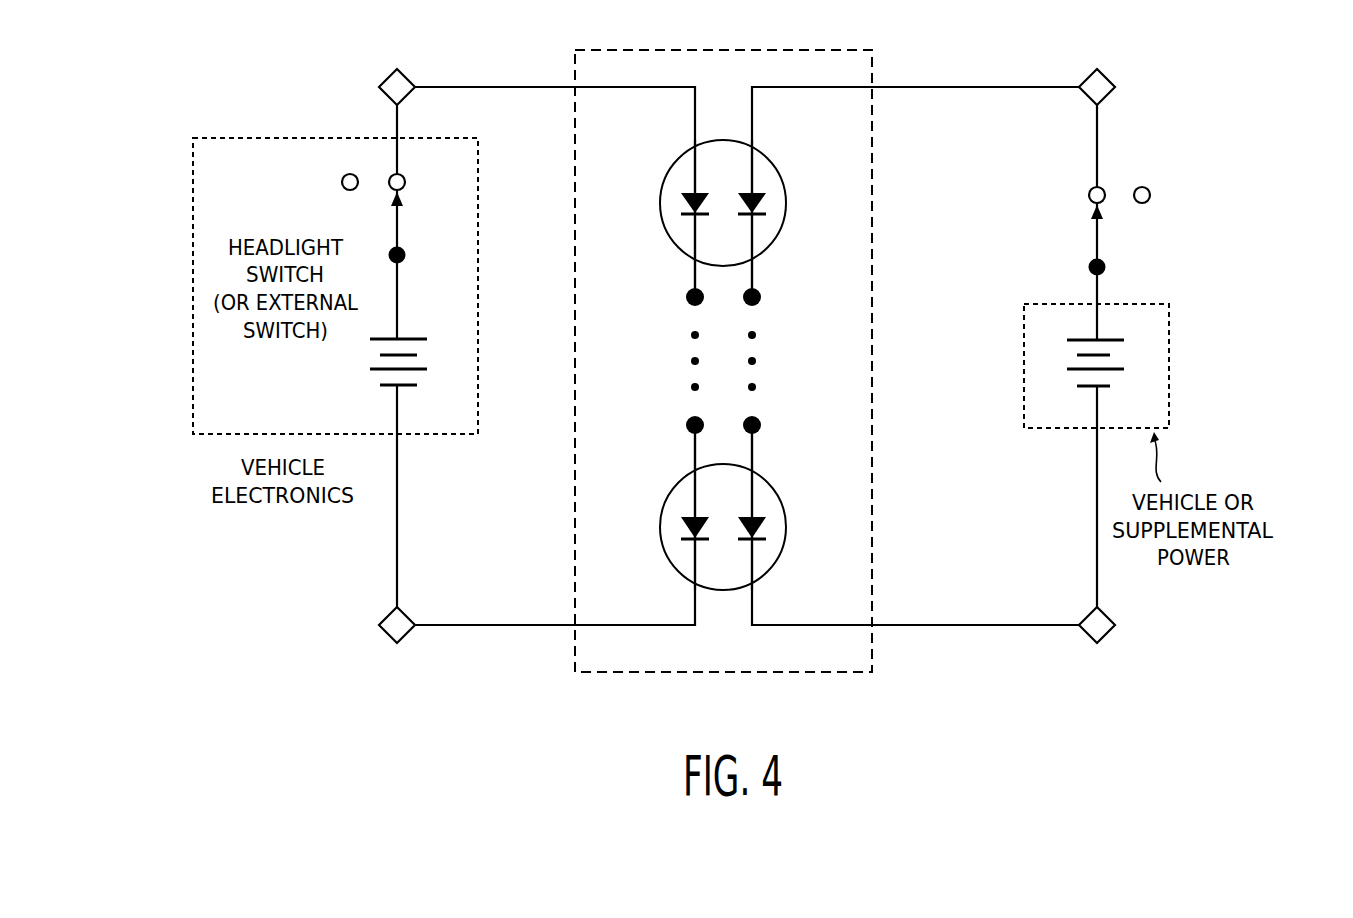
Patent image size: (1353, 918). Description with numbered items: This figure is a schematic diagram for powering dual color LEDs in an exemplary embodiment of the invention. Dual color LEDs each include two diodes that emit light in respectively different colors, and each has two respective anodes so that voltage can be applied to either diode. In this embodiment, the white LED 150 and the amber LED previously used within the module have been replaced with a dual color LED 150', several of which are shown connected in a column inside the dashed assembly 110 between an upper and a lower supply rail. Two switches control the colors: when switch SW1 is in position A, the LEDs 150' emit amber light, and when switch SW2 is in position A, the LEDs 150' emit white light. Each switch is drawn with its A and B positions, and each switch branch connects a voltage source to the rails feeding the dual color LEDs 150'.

The lighting module / LED circuit assembly 110 is at (572, 66).
The white LED 150 is at (750, 365).
The dual color LED 150' is at (750, 365).
The switch SW1 is at (388, 254).
The switch SW2 is at (1104, 255).